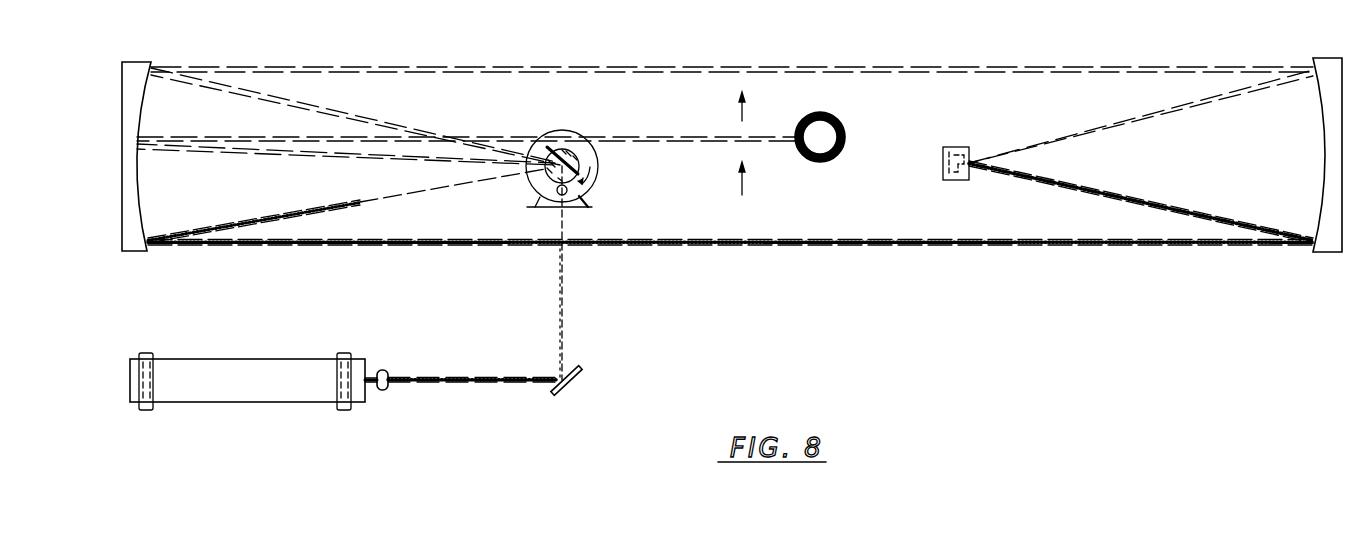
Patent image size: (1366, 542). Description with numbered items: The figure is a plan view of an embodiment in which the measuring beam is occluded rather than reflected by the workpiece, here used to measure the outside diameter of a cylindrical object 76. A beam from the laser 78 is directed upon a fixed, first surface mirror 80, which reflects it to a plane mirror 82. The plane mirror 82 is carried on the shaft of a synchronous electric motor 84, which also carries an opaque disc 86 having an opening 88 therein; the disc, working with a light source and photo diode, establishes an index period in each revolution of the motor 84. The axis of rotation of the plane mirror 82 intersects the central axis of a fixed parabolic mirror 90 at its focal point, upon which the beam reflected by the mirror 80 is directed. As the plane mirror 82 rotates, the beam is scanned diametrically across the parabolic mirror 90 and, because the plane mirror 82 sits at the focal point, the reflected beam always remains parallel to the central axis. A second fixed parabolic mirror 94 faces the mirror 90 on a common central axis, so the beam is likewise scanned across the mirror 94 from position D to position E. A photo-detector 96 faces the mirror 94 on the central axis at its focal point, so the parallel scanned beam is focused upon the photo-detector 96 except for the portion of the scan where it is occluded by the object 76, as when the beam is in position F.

The object 76 is at (843, 150).
The laser 78 is at (272, 359).
The first surface mirror 80 is at (580, 376).
The plane mirror 82 is at (546, 163).
The synchronous electric motor 84 is at (527, 197).
The opaque disc 86 is at (570, 131).
The opening 88 is at (576, 196).
The fixed parabolic mirror 90 is at (137, 199).
The second fixed parabolic mirror 94 is at (1324, 174).
The photo-detector 96 is at (972, 147).
The position D is at (913, 247).
The position E is at (928, 66).
The position F is at (760, 142).